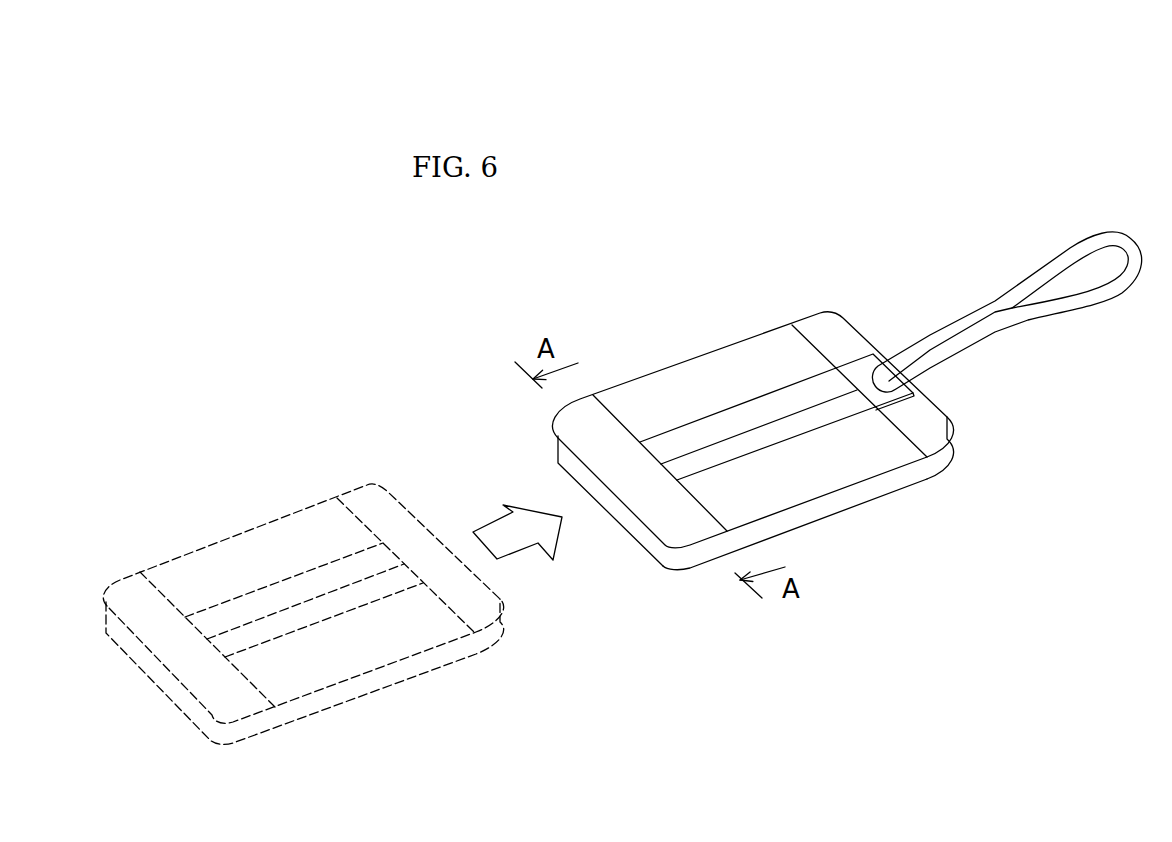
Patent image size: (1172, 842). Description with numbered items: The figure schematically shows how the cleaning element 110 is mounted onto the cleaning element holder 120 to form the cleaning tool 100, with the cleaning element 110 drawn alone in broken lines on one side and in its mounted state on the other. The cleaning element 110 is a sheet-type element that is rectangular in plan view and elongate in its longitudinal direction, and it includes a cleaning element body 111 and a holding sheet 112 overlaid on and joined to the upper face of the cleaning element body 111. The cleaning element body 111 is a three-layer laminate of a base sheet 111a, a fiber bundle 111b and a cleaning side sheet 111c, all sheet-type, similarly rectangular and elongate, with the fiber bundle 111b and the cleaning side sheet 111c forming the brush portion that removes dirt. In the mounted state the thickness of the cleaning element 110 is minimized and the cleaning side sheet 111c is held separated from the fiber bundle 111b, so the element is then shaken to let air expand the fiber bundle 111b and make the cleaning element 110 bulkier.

The cleaning tool 100 is at (811, 262).
The cleaning element 110 is at (570, 511).
The cleaning element body 111 is at (798, 531).
The base sheet 111a is at (670, 530).
The fiber bundle 111b is at (868, 490).
The cleaning side sheet 111c is at (920, 487).
The holding sheet 112 is at (642, 398).
The cleaning element holder 120 is at (960, 316).